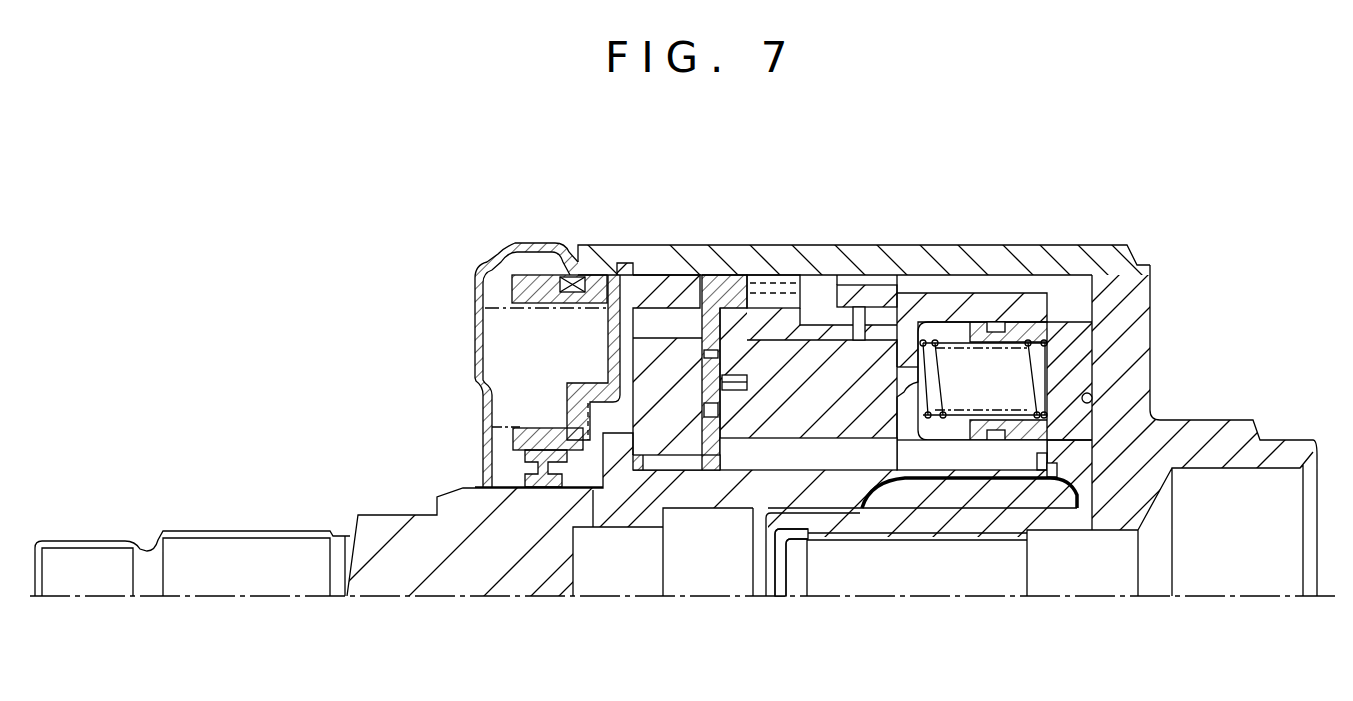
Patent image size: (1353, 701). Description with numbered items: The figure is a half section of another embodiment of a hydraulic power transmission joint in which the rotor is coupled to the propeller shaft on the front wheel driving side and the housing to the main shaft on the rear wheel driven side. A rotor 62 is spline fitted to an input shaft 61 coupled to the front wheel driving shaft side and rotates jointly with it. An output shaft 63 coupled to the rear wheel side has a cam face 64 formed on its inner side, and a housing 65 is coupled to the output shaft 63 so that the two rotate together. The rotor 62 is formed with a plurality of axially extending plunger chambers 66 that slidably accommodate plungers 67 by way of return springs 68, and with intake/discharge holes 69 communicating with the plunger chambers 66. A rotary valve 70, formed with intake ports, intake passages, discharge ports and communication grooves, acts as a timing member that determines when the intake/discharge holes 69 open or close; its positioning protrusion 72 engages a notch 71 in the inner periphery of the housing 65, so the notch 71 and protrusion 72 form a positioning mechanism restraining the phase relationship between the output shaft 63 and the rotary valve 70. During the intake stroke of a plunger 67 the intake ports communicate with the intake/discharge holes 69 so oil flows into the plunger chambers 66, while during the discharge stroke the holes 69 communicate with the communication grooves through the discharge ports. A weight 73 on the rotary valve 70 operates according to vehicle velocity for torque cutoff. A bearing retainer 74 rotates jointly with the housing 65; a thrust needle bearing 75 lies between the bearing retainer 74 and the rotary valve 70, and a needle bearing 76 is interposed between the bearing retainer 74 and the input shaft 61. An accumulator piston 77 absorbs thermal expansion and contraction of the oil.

The input shaft 61 is at (387, 580).
The rotor 62 is at (942, 452).
The output shaft 63 is at (1113, 513).
The cam face 64 is at (1092, 400).
The housing 65 is at (858, 252).
The plunger chambers 66 is at (893, 470).
The plungers 67 is at (1028, 322).
The return springs 68 is at (1050, 357).
The intake/discharge holes 69 is at (892, 382).
The rotary valve 70 is at (755, 372).
The notch 71 is at (772, 272).
The positioning protrusion 72 is at (790, 283).
The weight 73 is at (842, 288).
The bearing retainer 74 is at (652, 290).
The thrust needle bearing 75 is at (699, 388).
The needle bearing 76 is at (655, 465).
The accumulator piston 77 is at (498, 262).